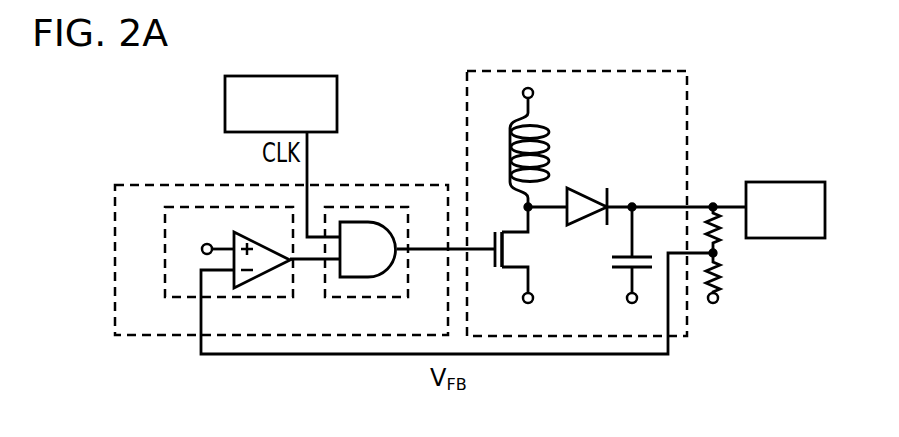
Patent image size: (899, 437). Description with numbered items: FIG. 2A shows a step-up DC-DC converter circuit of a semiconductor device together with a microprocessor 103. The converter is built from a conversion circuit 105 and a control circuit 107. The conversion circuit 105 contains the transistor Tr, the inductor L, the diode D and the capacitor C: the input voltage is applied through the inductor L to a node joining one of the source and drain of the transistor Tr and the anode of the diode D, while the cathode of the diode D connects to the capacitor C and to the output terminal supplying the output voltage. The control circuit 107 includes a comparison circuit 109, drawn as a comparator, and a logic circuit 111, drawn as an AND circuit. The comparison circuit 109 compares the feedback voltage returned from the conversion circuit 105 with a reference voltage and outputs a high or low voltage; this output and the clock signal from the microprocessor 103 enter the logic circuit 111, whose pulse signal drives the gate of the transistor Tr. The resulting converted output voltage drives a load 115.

The microprocessor 103 is at (281, 104).
The conversion circuit 105 is at (571, 187).
The control circuit 107 is at (281, 244).
The comparison circuit 109 is at (229, 269).
The logic circuit 111 is at (366, 269).
The load 115 is at (785, 210).